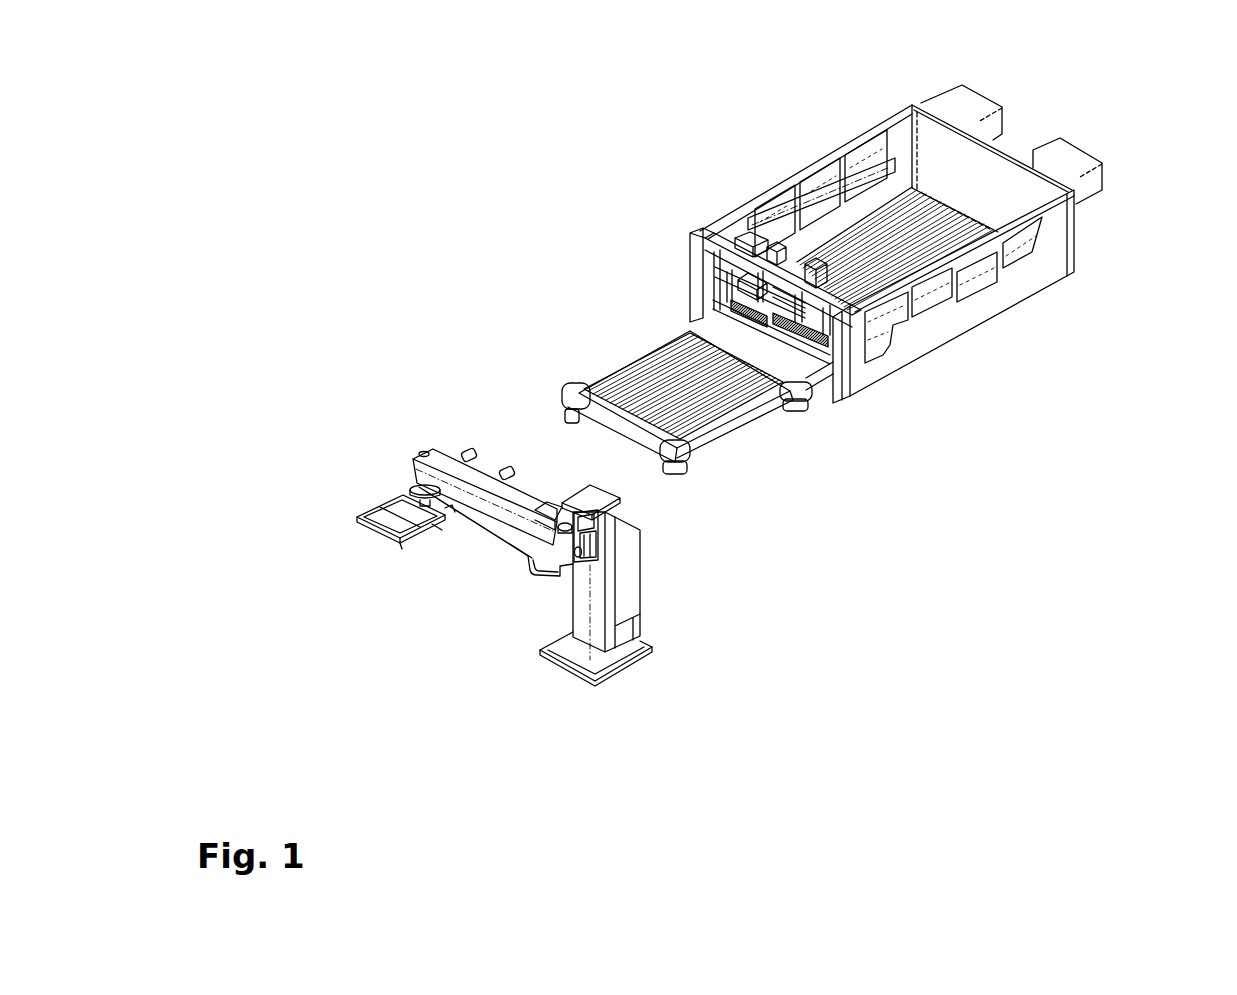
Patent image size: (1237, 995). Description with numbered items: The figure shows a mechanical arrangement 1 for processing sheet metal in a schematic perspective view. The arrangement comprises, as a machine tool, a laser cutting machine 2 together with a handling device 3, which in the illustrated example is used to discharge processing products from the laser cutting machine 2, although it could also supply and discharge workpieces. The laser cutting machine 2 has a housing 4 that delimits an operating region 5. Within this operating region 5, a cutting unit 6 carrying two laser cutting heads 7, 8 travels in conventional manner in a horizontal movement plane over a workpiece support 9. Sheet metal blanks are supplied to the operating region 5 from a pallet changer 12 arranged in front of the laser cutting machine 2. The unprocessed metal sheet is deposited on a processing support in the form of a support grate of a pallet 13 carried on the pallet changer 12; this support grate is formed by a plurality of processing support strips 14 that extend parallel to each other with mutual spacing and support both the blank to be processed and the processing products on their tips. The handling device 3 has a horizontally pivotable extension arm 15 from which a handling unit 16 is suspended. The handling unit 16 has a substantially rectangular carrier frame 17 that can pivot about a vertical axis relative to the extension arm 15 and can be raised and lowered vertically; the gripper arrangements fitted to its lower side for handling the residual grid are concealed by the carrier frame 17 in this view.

The mechanical arrangement 1 is at (446, 228).
The laser cutting machine 2 is at (1127, 219).
The handling device 3 is at (509, 639).
The housing 4 is at (1057, 263).
The operating region 5 is at (968, 180).
The cutting unit 6 is at (798, 233).
The laser cutting head 7 is at (756, 242).
The laser cutting head 8 is at (820, 288).
The workpiece support 9 is at (892, 240).
The pallet changer 12 is at (752, 440).
The pallet 13 is at (604, 405).
The processing support strips 14 is at (667, 370).
The extension arm 15 is at (495, 510).
The handling unit 16 is at (378, 480).
The carrier frame 17 is at (377, 523).